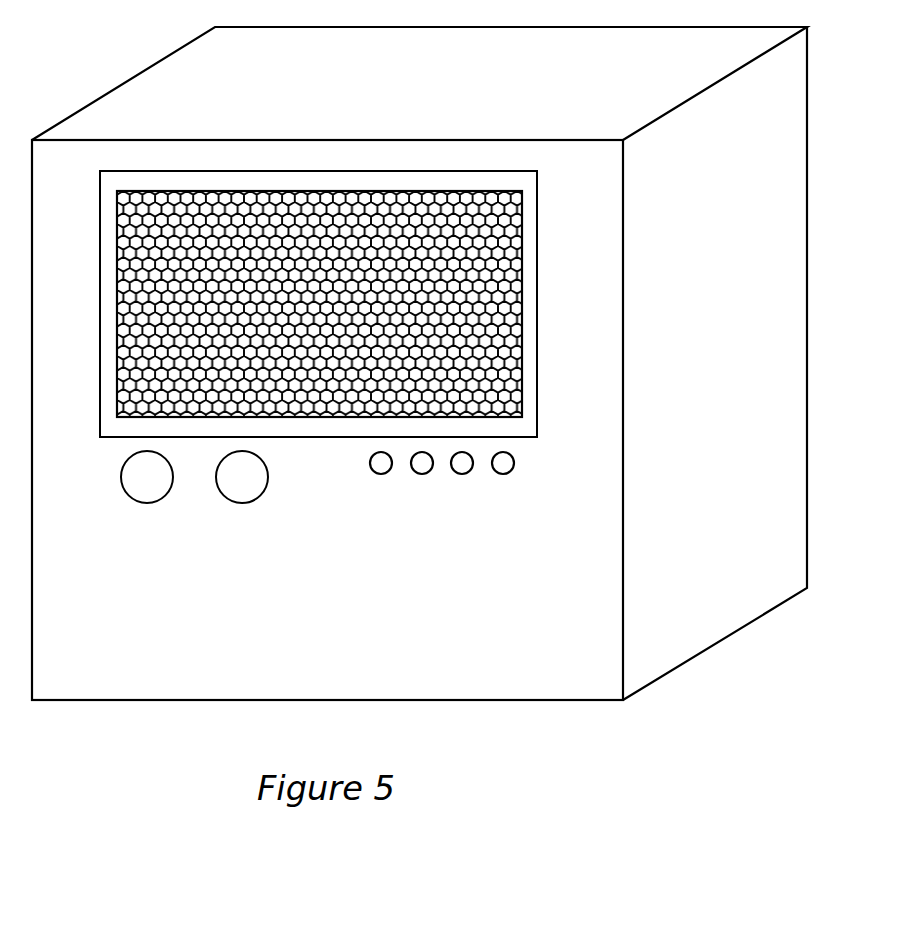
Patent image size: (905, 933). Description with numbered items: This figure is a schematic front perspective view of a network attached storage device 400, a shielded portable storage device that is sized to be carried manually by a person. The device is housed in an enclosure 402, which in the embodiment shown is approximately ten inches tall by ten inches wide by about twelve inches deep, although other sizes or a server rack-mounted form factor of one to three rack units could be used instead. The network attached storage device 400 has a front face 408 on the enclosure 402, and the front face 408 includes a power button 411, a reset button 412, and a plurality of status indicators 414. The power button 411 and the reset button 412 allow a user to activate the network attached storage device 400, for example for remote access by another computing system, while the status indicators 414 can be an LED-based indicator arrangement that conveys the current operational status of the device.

The network attached storage device 400 is at (419, 432).
The enclosure 402 is at (419, 392).
The front face 408 is at (342, 641).
The power button 411 is at (108, 536).
The reset button 412 is at (215, 530).
The status indicators 414 is at (388, 495).